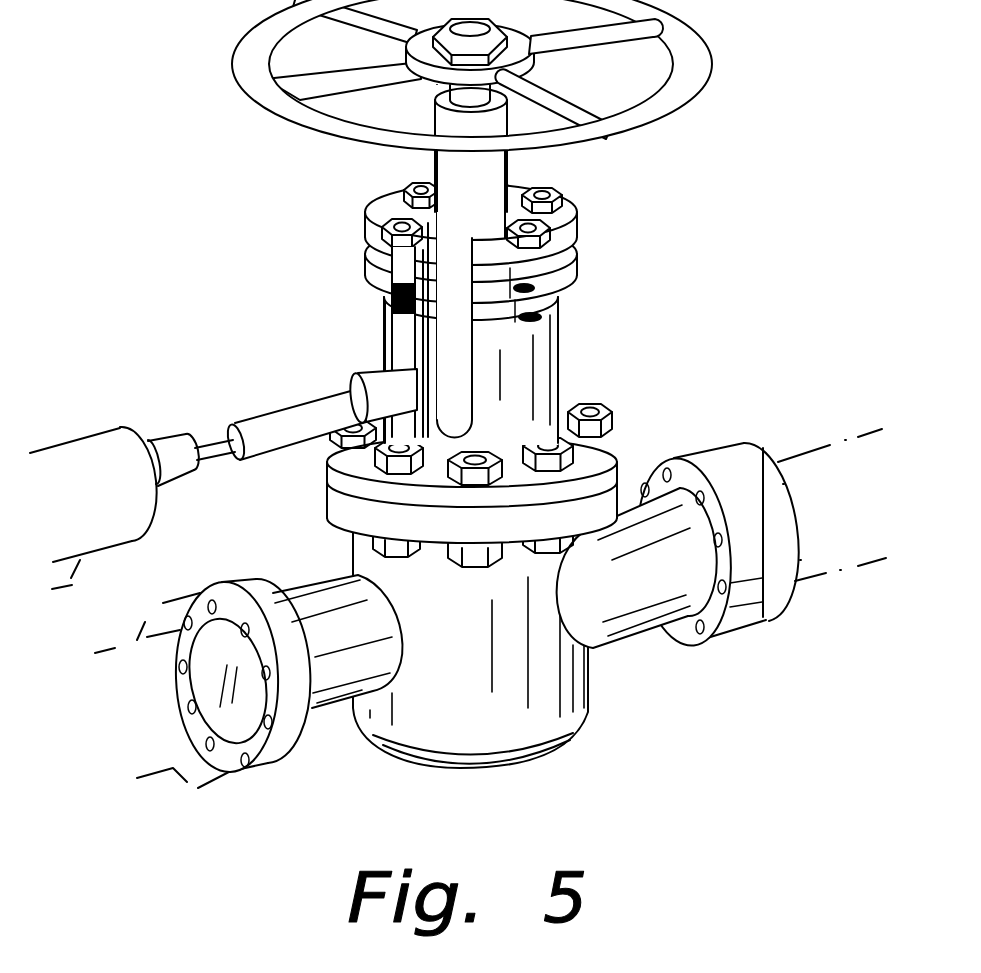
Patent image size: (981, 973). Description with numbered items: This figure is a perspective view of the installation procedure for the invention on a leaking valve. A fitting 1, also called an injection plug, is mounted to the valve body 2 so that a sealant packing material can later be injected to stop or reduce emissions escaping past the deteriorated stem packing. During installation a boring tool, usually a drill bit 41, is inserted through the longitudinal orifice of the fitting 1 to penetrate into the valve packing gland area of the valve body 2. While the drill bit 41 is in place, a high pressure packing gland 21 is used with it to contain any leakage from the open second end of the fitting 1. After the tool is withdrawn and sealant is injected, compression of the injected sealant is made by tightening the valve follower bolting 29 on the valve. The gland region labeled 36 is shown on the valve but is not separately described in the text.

The fitting 1 is at (378, 386).
The valve body 2 is at (490, 394).
The high pressure packing gland 21 is at (243, 414).
The valve follower bolting 29 is at (565, 192).
The gland flange 36 is at (590, 218).
The drill bit 41 is at (220, 454).